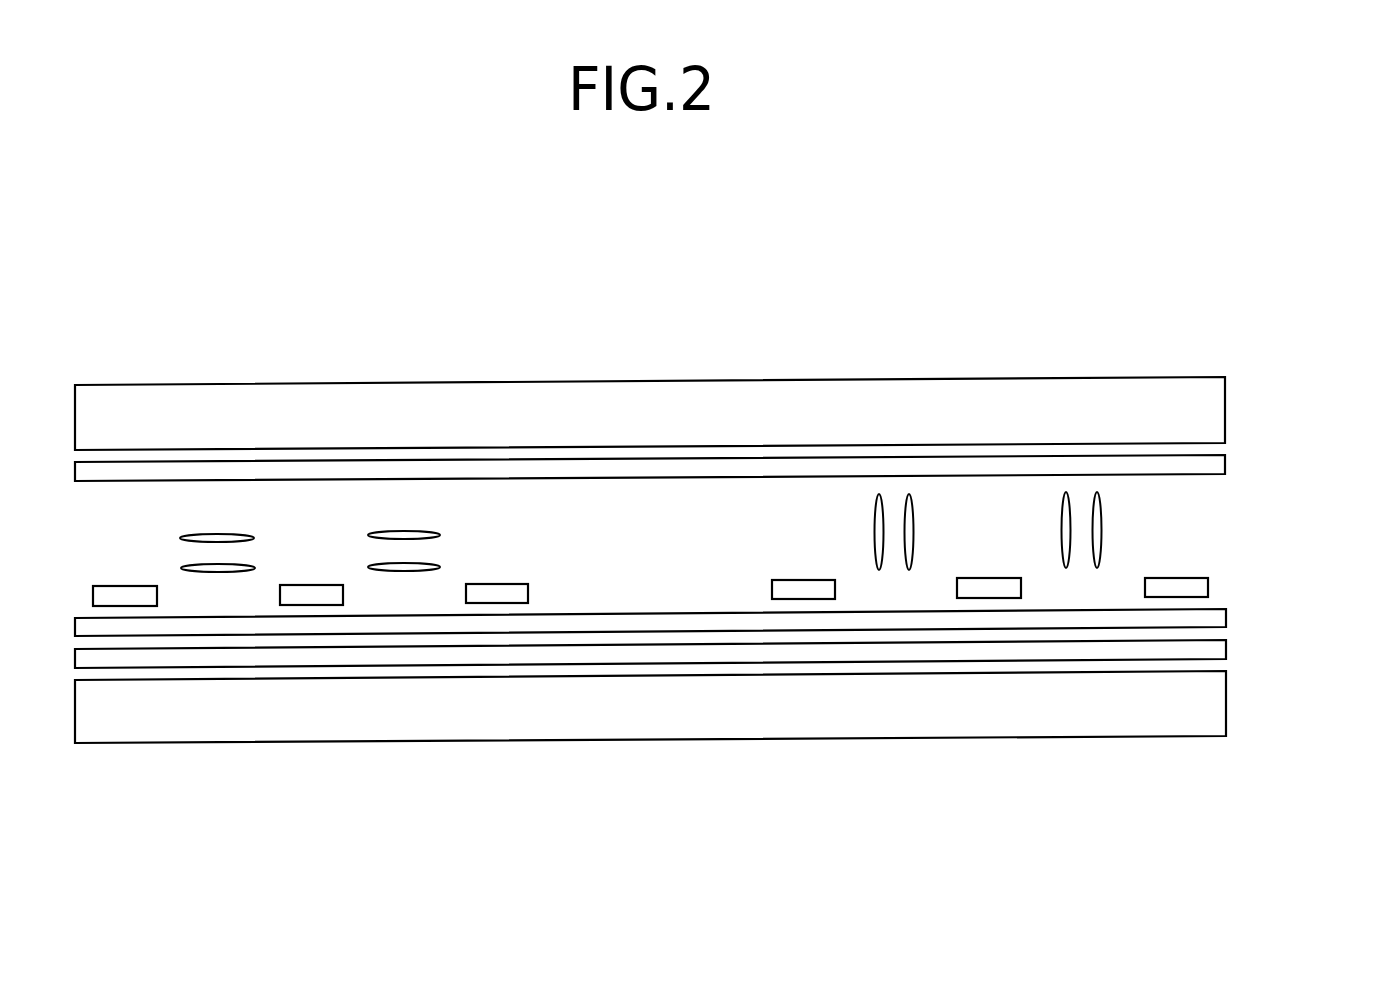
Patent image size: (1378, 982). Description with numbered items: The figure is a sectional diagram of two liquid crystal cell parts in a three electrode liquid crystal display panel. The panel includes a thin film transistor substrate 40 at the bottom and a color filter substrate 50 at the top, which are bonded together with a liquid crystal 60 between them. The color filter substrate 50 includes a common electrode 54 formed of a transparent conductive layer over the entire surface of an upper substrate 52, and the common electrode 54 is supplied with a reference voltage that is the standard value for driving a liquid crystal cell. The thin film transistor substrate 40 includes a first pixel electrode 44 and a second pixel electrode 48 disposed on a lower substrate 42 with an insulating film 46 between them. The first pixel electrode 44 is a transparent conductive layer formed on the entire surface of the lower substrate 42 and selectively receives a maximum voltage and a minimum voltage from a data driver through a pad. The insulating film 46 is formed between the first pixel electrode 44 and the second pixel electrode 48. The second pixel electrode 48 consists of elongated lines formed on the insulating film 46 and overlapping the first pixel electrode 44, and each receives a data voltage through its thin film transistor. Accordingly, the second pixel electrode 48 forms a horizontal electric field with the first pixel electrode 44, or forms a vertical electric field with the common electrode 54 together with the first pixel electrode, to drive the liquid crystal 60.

The thin film transistor substrate 40 is at (1306, 638).
The lower substrate 42 is at (1220, 705).
The first pixel electrode 44 is at (1226, 645).
The insulating film 46 is at (1226, 613).
The second pixel electrode 48 is at (1205, 578).
The color filter substrate 50 is at (1293, 442).
The upper substrate 52 is at (1225, 408).
The common electrode 54 is at (1225, 463).
The liquid crystal 60 is at (226, 533).